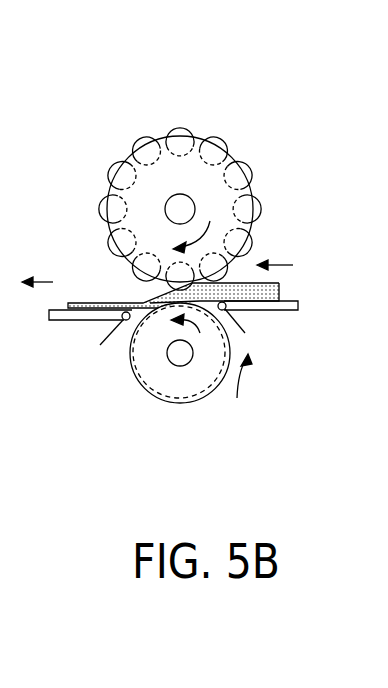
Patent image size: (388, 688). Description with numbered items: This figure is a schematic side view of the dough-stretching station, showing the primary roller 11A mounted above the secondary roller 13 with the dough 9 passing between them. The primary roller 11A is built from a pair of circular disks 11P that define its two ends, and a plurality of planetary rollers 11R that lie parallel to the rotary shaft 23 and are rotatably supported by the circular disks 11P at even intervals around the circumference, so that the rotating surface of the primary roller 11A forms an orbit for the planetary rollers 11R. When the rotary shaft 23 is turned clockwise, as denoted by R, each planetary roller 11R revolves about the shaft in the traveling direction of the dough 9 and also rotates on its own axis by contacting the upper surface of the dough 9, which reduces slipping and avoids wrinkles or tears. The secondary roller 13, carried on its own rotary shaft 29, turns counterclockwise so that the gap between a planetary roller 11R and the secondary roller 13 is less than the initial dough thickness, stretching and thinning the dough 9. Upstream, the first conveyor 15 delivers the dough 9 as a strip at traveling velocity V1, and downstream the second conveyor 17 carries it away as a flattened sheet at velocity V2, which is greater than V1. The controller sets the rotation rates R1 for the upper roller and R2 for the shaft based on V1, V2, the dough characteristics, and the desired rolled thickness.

The primary roller 11A is at (197, 158).
The circular disks 11P is at (143, 173).
The planetary rollers 11R is at (248, 165).
The rotary shaft 23 is at (179, 201).
The dough 9 is at (243, 280).
The first conveyor 15 is at (302, 308).
The second conveyor 17 is at (59, 320).
The secondary roller 13 is at (170, 395).
The rotary shaft 29 is at (173, 360).
The clockwise rotation R is at (181, 239).
The rotation rate of the upper roller R1 is at (200, 333).
The rotation rate of the shaft R2 is at (259, 389).
The traveling velocity of the first conveyor V1 is at (290, 262).
The traveling velocity of the second conveyor V2 is at (56, 282).